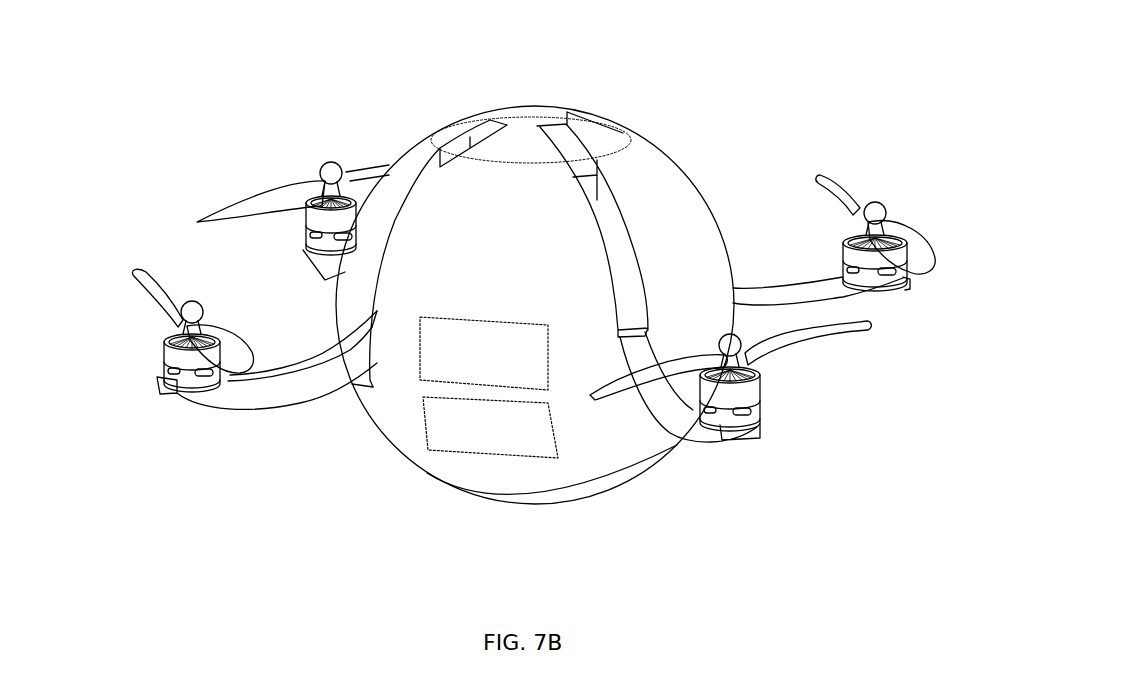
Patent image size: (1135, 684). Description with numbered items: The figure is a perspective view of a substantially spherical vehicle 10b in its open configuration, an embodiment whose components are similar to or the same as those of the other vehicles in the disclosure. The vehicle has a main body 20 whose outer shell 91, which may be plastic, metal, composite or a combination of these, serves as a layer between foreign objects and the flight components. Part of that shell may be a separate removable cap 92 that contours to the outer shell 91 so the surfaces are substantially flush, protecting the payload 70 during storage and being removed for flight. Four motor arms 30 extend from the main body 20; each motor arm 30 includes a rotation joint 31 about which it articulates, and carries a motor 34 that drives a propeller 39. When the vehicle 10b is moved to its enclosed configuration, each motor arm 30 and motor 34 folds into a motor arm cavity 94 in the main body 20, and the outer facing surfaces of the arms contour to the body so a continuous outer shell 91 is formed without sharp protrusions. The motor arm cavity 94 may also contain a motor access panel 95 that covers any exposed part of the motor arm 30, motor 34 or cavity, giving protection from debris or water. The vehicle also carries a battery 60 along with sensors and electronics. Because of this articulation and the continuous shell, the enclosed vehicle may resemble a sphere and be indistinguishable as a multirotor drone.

The substantially spherical vehicle 10b is at (152, 75).
The main body 20 is at (418, 152).
The motor arm 30 is at (240, 400).
The rotation joint 31 is at (350, 312).
The motor 34 is at (765, 398).
The propeller 39 is at (855, 180).
The battery 60 is at (487, 430).
The payload 70 is at (523, 500).
The outer shell 91 is at (647, 173).
The removable cap 92 is at (483, 355).
The motor arm cavity 94 is at (620, 260).
The motor access panel 95 is at (607, 140).